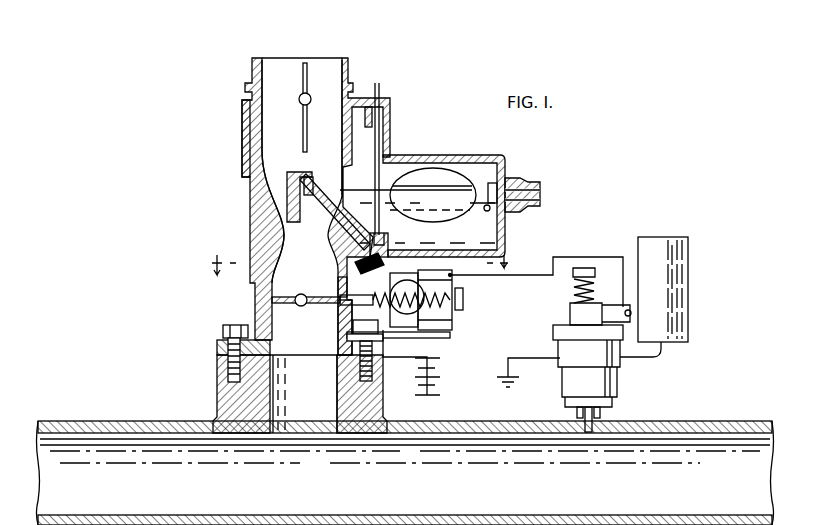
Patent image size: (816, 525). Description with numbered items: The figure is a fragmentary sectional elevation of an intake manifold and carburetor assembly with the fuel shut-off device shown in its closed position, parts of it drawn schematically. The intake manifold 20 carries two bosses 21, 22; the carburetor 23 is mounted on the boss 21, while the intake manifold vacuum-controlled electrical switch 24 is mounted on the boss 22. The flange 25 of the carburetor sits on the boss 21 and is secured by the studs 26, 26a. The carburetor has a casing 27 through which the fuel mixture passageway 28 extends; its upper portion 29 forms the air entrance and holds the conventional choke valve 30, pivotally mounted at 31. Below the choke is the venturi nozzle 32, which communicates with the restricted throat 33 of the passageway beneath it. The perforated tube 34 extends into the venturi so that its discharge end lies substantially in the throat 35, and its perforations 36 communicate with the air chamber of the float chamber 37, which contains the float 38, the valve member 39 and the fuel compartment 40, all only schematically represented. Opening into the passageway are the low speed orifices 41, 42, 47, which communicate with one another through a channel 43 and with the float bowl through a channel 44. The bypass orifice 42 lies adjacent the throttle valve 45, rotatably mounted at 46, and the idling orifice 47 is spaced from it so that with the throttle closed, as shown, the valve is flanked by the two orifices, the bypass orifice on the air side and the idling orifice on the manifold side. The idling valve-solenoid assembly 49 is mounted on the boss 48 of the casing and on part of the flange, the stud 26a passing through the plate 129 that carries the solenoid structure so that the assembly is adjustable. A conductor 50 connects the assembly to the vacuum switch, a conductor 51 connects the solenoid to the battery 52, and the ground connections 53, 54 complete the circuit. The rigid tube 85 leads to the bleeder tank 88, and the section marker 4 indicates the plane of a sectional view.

The section line 4 is at (355, 256).
The intake manifold 20 is at (699, 421).
The boss 21 is at (217, 397).
The boss 22 is at (600, 415).
The carburetor 23 is at (247, 298).
The intake manifold vacuum-controlled electrical switch 24 is at (627, 377).
The flange 25 is at (217, 347).
The stud 26 is at (225, 329).
The stud 26a is at (334, 362).
The casing 27 is at (242, 128).
The fuel mixture passageway 28 is at (284, 53).
The upper portion 29 is at (324, 60).
The choke valve 30 is at (303, 78).
The pivot 31 is at (310, 98).
The venturi nozzle 32 is at (289, 174).
The restricted throat 33 is at (284, 242).
The perforated tube 34 is at (314, 177).
The throat 35 is at (300, 191).
The perforations 36 is at (340, 228).
The float chamber 37 is at (440, 155).
The float 38 is at (472, 165).
The valve member 39 is at (381, 156).
The fuel compartment 40 is at (390, 244).
The low speed orifice 41 is at (343, 167).
The bypass orifice 42 is at (338, 287).
The channel 43 is at (418, 182).
The channel 44 is at (430, 209).
The throttle valve 45 is at (291, 305).
The pivot 46 is at (301, 293).
The idling orifice 47 is at (350, 304).
The boss 48 is at (350, 320).
The idling valve-solenoid assembly 49 is at (471, 309).
The conductor 50 is at (520, 270).
The conductor 51 is at (418, 356).
The battery 52 is at (436, 377).
The ground connection 53 is at (432, 395).
The ground connection 54 is at (519, 382).
The rigid tube 85 is at (661, 355).
The bleeder tank 88 is at (695, 284).
The plate 129 is at (450, 337).